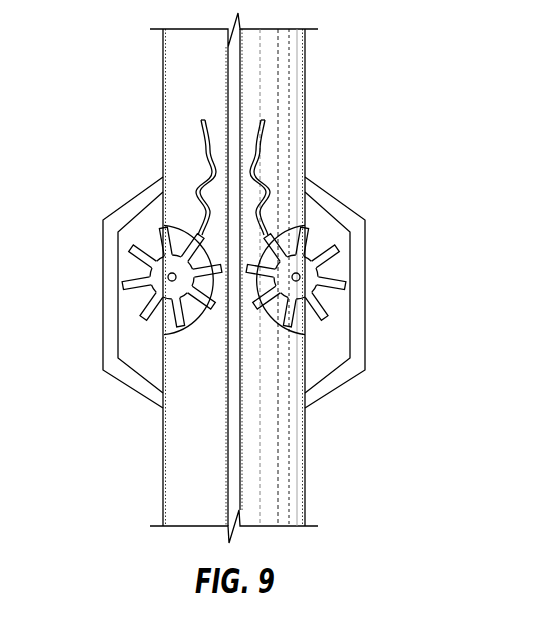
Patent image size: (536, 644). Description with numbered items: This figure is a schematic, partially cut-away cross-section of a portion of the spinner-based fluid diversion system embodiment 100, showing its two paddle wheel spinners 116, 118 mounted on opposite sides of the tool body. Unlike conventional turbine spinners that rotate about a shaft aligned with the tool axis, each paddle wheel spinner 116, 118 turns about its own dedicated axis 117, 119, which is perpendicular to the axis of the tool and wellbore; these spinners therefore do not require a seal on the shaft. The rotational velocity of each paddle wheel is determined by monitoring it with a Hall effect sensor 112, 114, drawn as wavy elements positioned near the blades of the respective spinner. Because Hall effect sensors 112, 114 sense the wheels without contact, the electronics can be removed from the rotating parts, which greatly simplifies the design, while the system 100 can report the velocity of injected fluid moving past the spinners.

The system embodiment 100 is at (335, 52).
The Hall effect sensor 112 is at (268, 220).
The Hall effect sensor 114 is at (195, 223).
The paddle wheel spinner 116 is at (327, 250).
The dedicated axis 117 is at (300, 277).
The paddle wheel spinner 118 is at (135, 285).
The dedicated axis 119 is at (168, 279).